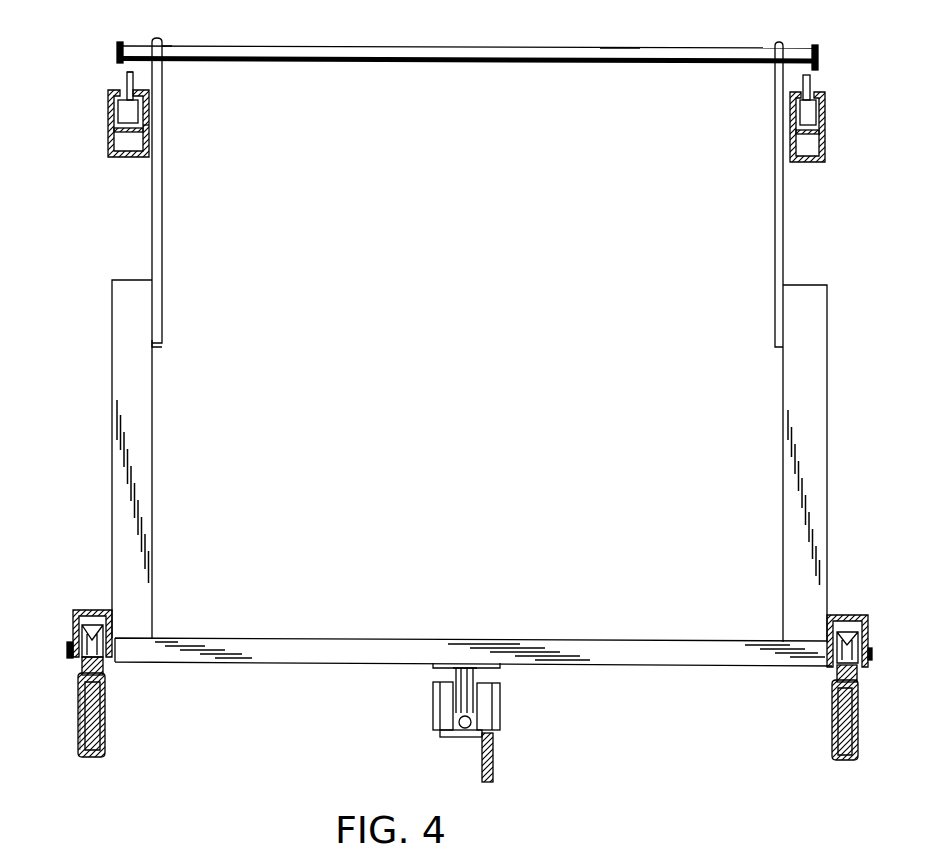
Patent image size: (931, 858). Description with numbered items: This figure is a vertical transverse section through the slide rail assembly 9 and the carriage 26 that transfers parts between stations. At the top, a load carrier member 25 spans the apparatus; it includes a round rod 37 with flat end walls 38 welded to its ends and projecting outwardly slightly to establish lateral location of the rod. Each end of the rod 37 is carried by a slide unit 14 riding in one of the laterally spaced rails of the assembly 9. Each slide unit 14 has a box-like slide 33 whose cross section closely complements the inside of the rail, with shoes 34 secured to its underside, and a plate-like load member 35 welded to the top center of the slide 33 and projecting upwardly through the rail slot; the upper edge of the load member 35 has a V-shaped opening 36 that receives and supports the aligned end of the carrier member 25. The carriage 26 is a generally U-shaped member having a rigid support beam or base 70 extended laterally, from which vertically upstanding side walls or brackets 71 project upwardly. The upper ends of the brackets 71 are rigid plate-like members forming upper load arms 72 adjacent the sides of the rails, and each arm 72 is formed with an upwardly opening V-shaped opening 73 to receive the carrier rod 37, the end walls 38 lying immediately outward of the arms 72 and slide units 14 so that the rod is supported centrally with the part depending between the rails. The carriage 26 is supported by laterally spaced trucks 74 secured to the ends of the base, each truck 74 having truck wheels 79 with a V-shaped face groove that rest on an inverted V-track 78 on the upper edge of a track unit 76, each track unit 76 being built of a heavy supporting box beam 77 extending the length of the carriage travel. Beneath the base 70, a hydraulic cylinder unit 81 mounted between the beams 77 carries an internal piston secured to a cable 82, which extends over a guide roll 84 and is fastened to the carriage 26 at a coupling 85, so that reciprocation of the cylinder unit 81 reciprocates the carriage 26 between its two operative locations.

The slide rail assembly 9 is at (158, 135).
The slide unit 14 is at (105, 170).
The load carrier member 25 is at (613, 78).
The carriage 26 is at (170, 325).
The slide 33 is at (137, 107).
The shoe 34 is at (133, 132).
The load member 35 is at (127, 82).
The V-shaped opening 36 is at (133, 77).
The round rod 37 is at (462, 53).
The flat end wall 38 is at (117, 48).
The support beam or base 70 is at (507, 640).
The side wall or bracket 71 is at (145, 445).
The upper load arm 72 is at (165, 212).
The V-shaped opening 73 is at (172, 47).
The truck 74 is at (90, 603).
The track unit 76 is at (112, 740).
The box beam 77 is at (475, 720).
The inverted V-track 78 is at (105, 672).
The truck wheel 79 is at (110, 637).
The hydraulic cylinder unit 81 is at (465, 737).
The cable 82 is at (468, 697).
The guide roll 84 is at (453, 702).
The coupling 85 is at (497, 668).